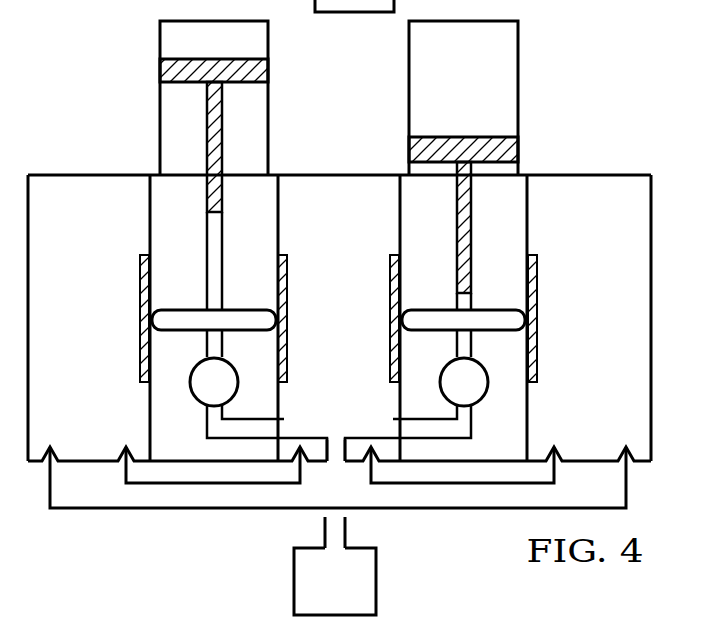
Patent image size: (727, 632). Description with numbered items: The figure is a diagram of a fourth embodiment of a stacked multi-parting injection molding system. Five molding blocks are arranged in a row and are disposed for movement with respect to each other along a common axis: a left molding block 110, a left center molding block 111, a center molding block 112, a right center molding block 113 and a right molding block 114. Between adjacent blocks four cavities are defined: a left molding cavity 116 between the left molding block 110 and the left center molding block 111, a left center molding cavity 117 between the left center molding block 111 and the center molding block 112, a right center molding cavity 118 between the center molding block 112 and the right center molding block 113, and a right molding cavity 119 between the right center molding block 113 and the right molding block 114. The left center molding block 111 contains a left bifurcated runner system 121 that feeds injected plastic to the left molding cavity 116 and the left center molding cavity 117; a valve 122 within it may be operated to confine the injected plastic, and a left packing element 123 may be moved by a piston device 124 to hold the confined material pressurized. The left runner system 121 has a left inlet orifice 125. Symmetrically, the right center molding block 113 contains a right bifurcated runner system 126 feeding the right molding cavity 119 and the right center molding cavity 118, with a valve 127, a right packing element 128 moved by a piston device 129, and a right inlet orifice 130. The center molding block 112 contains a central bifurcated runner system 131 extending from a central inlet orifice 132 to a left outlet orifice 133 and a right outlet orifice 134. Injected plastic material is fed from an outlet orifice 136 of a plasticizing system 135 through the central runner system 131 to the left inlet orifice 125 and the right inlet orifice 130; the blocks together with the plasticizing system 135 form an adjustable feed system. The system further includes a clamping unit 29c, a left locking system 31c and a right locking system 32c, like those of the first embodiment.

The left molding block 110 is at (112, 174).
The left center molding block 111 is at (152, 174).
The center molding block 112 is at (273, 174).
The right center molding block 113 is at (398, 174).
The right molding block 114 is at (585, 175).
The left molding cavity 116 is at (140, 265).
The left center molding cavity 117 is at (287, 268).
The right center molding cavity 118 is at (390, 272).
The right molding cavity 119 is at (538, 276).
The left bifurcated runner system 121 is at (207, 352).
The valve 122 is at (228, 364).
The left packing element 123 is at (224, 193).
The piston device 124 is at (272, 47).
The left inlet orifice 125 is at (285, 441).
The right bifurcated runner system 126 is at (472, 344).
The valve 127 is at (448, 372).
The right packing element 128 is at (472, 210).
The piston device 129 is at (519, 38).
The right inlet orifice 130 is at (413, 434).
The central bifurcated runner system 131 is at (325, 438).
The central inlet orifice 132 is at (332, 457).
The left outlet orifice 133 is at (285, 423).
The right outlet orifice 134 is at (407, 436).
The plasticizing system 135 is at (378, 576).
The outlet orifice 136 is at (343, 512).
The clamping unit 29c is at (205, 510).
The left locking system 31c is at (250, 485).
The right locking system 32c is at (492, 485).